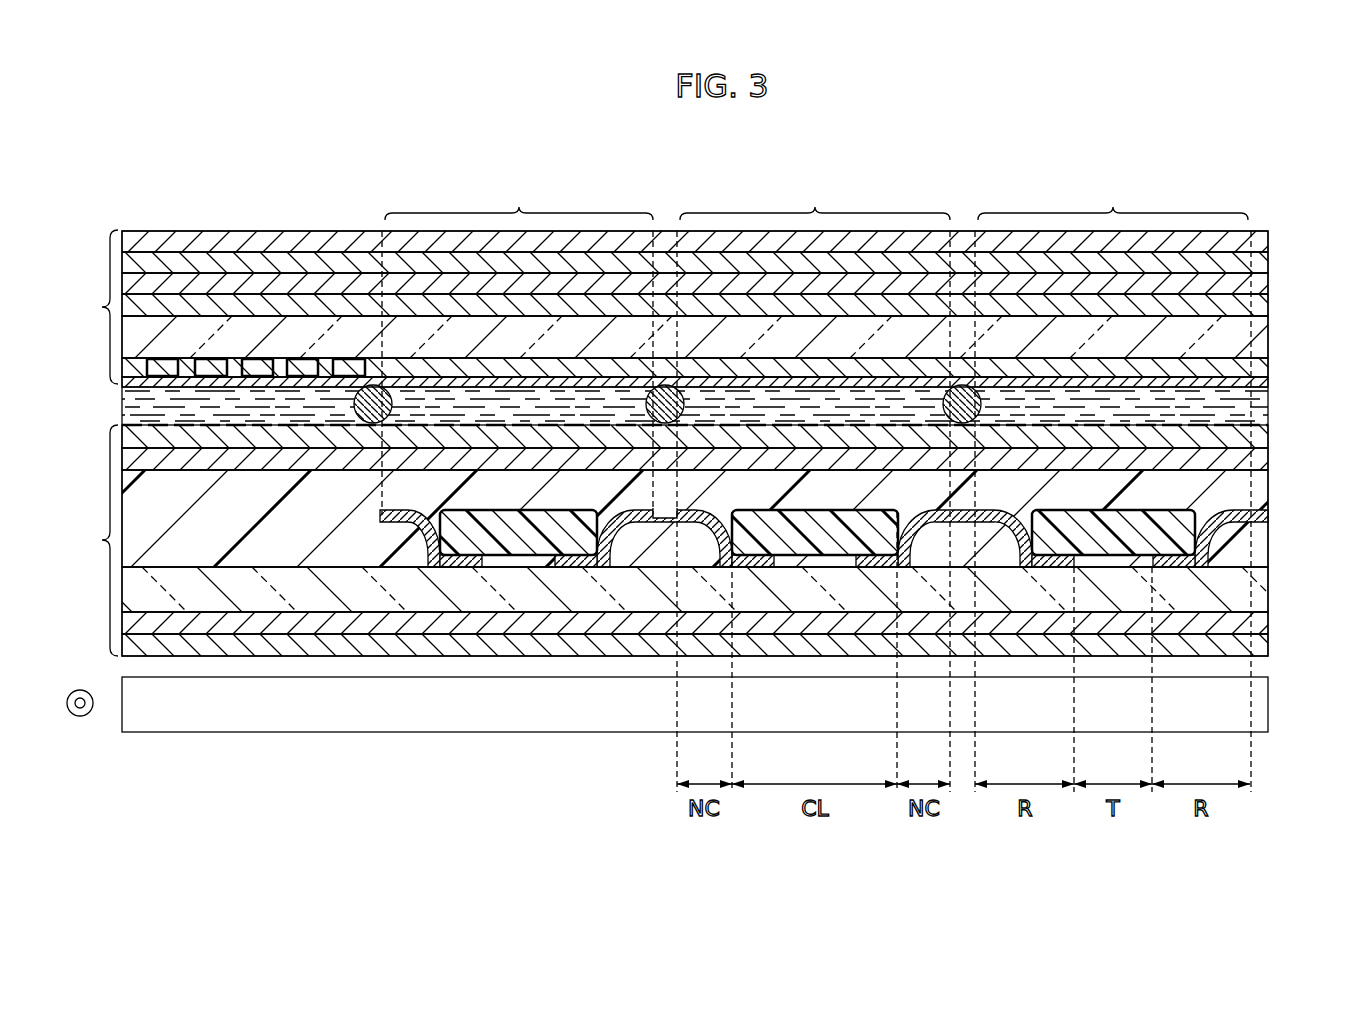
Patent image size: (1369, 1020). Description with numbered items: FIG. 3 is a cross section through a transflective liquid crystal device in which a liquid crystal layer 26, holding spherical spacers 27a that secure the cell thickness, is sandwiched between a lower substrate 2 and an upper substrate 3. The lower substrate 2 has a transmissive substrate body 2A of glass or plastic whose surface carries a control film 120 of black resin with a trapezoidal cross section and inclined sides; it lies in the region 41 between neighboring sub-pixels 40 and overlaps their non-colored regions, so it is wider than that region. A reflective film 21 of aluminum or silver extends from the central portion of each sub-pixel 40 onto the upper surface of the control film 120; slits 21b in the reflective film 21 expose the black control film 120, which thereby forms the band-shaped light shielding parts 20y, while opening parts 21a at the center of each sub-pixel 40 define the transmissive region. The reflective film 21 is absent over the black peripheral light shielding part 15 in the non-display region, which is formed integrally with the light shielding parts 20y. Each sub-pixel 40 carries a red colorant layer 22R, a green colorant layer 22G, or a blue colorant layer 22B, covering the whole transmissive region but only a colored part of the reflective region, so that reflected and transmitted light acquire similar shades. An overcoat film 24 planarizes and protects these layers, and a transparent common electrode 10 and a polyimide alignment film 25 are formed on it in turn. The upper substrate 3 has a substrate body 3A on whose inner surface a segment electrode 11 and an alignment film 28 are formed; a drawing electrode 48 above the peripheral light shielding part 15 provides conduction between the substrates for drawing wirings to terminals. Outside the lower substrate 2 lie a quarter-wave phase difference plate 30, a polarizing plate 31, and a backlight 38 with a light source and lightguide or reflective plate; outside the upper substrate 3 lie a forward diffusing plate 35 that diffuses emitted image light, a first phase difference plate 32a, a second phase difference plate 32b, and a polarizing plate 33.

The lower substrate 2 is at (99, 540).
The upper substrate 3 is at (99, 307).
The common electrode 10 is at (1255, 459).
The segment electrode 11 is at (1255, 367).
The peripheral light shielding part 15 is at (233, 565).
The light shielding part 20y is at (668, 505).
The reflective film 21 is at (447, 565).
The opening part 21a is at (492, 565).
The slit 21b is at (655, 513).
The red colorant layer 22R is at (530, 555).
The green colorant layer 22G is at (835, 560).
The blue colorant layer 22B is at (1135, 548).
The overcoat film 24 is at (1255, 490).
The alignment film 25 is at (1255, 437).
The liquid crystal layer 26 is at (135, 398).
The spacer 27a is at (371, 386).
The alignment film 28 is at (1255, 382).
The substrate body 2A is at (1255, 590).
The phase difference plate 30 is at (1255, 623).
The polarizing plate 31 is at (1255, 645).
The first phase difference plate 32a is at (1255, 284).
The second phase difference plate 32b is at (1255, 263).
The polarizing plate 33 is at (1255, 243).
The forward diffusing plate 35 is at (1255, 305).
The backlight 38 is at (1255, 705).
The substrate body 3A is at (1255, 337).
The sub-pixel 40 is at (816, 486).
The region between the sub-pixels 41 is at (667, 205).
The drawing electrode 48 is at (210, 360).
The control film 120 is at (648, 555).